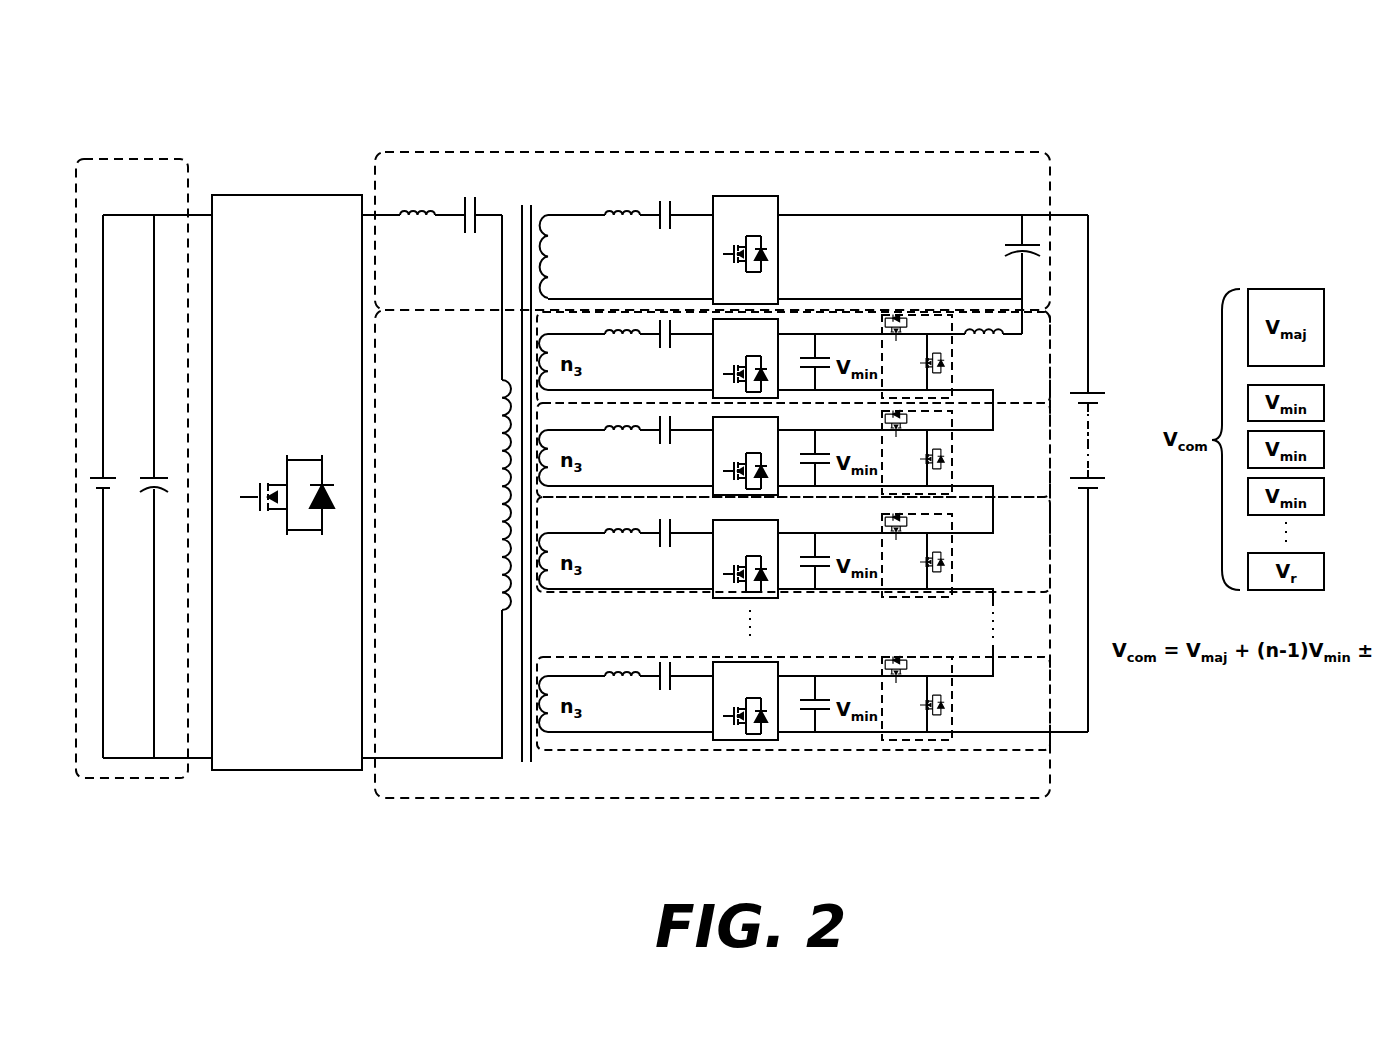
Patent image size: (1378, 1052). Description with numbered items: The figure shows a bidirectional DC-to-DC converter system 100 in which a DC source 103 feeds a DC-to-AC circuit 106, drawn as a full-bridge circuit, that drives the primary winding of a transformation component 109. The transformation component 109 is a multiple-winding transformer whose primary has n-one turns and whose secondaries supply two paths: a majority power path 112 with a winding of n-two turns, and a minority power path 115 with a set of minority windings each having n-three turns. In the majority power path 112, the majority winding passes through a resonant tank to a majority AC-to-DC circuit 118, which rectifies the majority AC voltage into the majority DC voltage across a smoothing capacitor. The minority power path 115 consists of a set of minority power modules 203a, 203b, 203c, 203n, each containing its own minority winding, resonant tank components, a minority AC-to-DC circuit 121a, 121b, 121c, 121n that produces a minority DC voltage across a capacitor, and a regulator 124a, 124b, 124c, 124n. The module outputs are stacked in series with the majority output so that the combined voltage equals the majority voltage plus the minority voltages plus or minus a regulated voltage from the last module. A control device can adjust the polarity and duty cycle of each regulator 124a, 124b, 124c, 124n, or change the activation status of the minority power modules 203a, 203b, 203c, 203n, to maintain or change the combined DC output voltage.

The DC-to-DC converter system 100 is at (131, 100).
The DC source 103 is at (150, 191).
The DC-to-AC circuit 106 is at (305, 227).
The transformation component 109 is at (527, 186).
The majority power path 112 is at (730, 181).
The minority power path 115 is at (730, 786).
The majority AC-to-DC circuit 118 is at (763, 222).
The minority AC-to-DC circuit 121a is at (769, 345).
The minority AC-to-DC circuit 121b is at (769, 443).
The minority AC-to-DC circuit 121c is at (769, 546).
The minority AC-to-DC circuit 121n is at (769, 688).
The regulator 124a is at (956, 360).
The regulator 124b is at (956, 456).
The regulator 124c is at (956, 566).
The regulator 124n is at (956, 745).
The minority power module 203a is at (1052, 346).
The minority power module 203b is at (1052, 442).
The minority power module 203c is at (1052, 545).
The minority power module 203n is at (1052, 701).